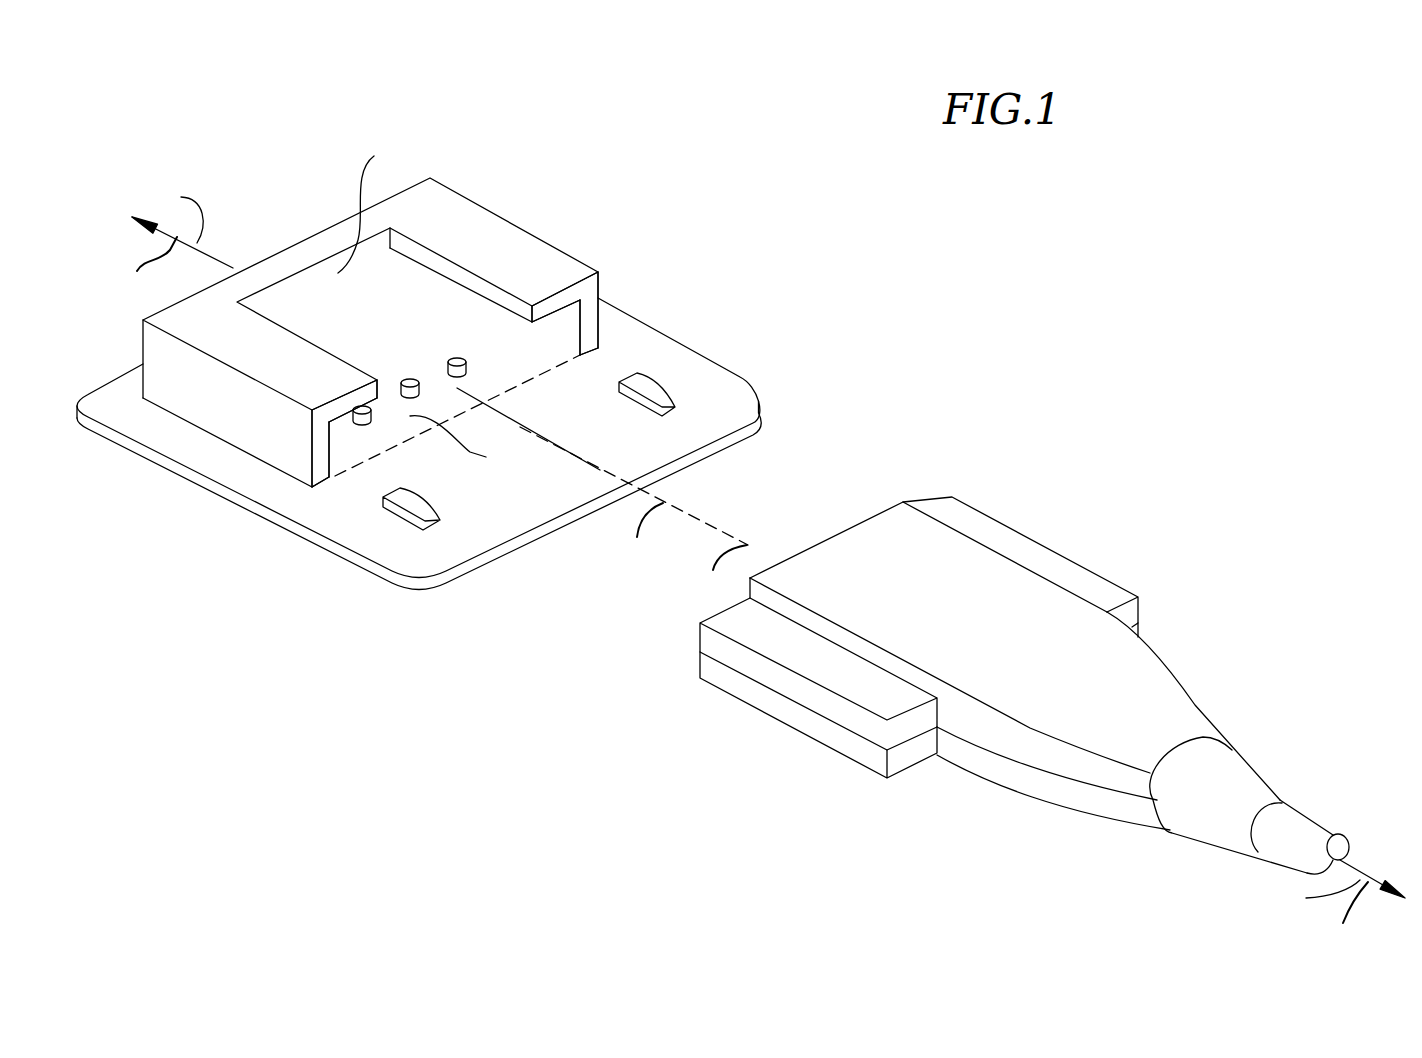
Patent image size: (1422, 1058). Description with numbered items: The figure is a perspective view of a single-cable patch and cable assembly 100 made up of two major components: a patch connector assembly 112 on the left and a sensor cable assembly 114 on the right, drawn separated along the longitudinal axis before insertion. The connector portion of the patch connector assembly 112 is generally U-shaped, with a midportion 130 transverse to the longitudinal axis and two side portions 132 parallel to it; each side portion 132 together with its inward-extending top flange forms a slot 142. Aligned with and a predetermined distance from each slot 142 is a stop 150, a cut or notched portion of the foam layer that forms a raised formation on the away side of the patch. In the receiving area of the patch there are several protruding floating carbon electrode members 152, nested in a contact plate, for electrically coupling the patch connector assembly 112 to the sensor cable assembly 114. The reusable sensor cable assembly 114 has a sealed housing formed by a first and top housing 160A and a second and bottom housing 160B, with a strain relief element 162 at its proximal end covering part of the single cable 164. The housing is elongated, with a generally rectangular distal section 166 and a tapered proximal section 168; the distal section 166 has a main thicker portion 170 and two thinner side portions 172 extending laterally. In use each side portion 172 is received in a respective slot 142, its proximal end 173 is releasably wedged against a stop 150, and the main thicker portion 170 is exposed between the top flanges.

The patch and cable assembly 100 is at (972, 328).
The patch connector assembly 112 is at (451, 128).
The sensor cable assembly 114 is at (1176, 551).
The midportion 130 is at (333, 223).
The side portions 132 is at (510, 220).
The slot 142 is at (563, 327).
The stop 150 is at (650, 390).
The electrode members 152 is at (457, 358).
The first and top housing 160A is at (1142, 677).
The second and bottom housing 160B is at (1100, 817).
The strain relief element 162 is at (1220, 765).
The single cable 164 is at (1283, 850).
The distal section 166 is at (845, 528).
The tapered proximal section 168 is at (1183, 693).
The main thicker portion 170 is at (892, 540).
The side portions 172 is at (1037, 540).
The proximal end 173 is at (1128, 615).